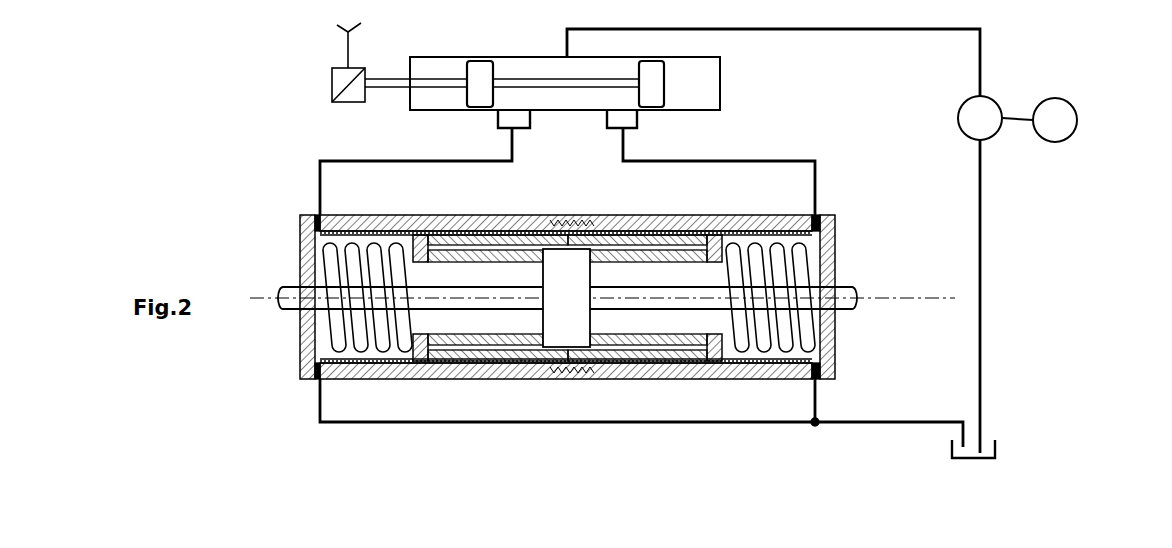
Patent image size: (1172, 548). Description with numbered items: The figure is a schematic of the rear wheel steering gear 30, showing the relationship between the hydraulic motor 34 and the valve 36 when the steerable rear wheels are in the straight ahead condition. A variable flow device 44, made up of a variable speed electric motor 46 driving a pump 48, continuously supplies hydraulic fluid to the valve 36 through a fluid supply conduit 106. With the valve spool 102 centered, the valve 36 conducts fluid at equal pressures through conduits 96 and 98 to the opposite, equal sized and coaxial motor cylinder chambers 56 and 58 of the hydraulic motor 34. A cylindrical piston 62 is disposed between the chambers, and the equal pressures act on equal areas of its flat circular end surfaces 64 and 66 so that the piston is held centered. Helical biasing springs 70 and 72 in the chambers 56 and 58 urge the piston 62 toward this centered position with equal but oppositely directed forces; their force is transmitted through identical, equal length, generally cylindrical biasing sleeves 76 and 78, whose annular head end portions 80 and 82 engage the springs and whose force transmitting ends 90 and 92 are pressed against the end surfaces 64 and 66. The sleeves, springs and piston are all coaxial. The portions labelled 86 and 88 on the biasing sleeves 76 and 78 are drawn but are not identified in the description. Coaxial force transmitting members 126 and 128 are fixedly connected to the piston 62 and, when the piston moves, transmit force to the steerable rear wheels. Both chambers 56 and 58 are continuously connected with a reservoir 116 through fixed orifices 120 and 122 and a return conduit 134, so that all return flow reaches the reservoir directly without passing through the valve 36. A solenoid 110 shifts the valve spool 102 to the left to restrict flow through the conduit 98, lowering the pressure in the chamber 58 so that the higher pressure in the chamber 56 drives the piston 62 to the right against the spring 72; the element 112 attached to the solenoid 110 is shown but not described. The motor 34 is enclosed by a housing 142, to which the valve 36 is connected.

The rear wheel steering gear 30 is at (235, 118).
The hydraulic motor 34 is at (842, 211).
The valve 36 is at (458, 53).
The variable flow device 44 is at (1045, 48).
The variable speed electric motor 46 is at (1060, 100).
The pump 48 is at (962, 115).
The motor cylinder chamber 56 is at (300, 238).
The motor cylinder chamber 58 is at (816, 250).
The cylindrical piston 62 is at (572, 252).
The piston end surface 64 is at (537, 330).
The piston end surface 66 is at (597, 330).
The biasing spring 70 is at (383, 252).
The biasing spring 72 is at (752, 255).
The biasing sleeve 76 is at (468, 346).
The biasing sleeve 78 is at (640, 349).
The annular head end portion 80 is at (420, 362).
The annular head end portion 82 is at (722, 362).
The upper left outer sleeve 86 is at (442, 238).
The upper right outer sleeve 88 is at (700, 240).
The force transmitting end 90 is at (537, 255).
The force transmitting end 92 is at (600, 255).
The motor cylinder chamber conduit 96 is at (355, 161).
The motor cylinder chamber conduit 98 is at (735, 161).
The valve spool 102 is at (670, 84).
The fluid supply conduit 106 is at (773, 62).
The solenoid 110 is at (332, 82).
The antenna / wireless receiver 112 is at (345, 39).
The reservoir 116 is at (998, 448).
The fixed orifice 120 is at (318, 380).
The fixed orifice 122 is at (820, 384).
The force transmitting member 126 is at (290, 290).
The force transmitting member 128 is at (850, 292).
The return conduit 134 is at (902, 423).
The housing 142 is at (487, 376).